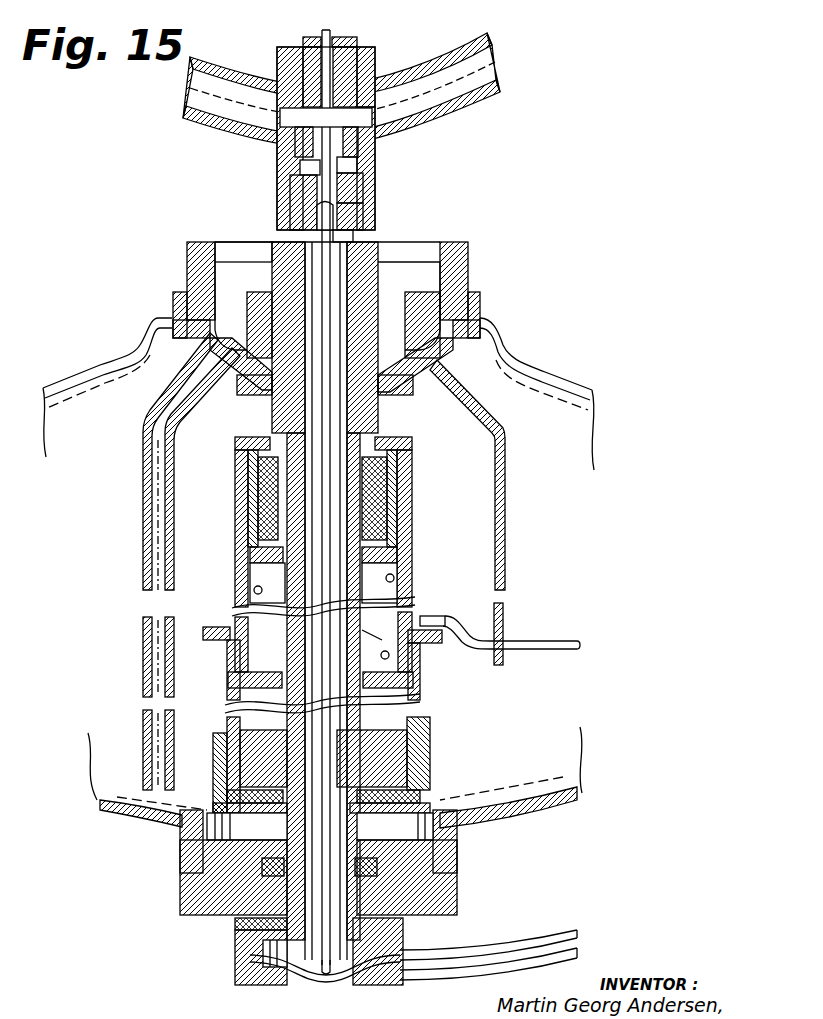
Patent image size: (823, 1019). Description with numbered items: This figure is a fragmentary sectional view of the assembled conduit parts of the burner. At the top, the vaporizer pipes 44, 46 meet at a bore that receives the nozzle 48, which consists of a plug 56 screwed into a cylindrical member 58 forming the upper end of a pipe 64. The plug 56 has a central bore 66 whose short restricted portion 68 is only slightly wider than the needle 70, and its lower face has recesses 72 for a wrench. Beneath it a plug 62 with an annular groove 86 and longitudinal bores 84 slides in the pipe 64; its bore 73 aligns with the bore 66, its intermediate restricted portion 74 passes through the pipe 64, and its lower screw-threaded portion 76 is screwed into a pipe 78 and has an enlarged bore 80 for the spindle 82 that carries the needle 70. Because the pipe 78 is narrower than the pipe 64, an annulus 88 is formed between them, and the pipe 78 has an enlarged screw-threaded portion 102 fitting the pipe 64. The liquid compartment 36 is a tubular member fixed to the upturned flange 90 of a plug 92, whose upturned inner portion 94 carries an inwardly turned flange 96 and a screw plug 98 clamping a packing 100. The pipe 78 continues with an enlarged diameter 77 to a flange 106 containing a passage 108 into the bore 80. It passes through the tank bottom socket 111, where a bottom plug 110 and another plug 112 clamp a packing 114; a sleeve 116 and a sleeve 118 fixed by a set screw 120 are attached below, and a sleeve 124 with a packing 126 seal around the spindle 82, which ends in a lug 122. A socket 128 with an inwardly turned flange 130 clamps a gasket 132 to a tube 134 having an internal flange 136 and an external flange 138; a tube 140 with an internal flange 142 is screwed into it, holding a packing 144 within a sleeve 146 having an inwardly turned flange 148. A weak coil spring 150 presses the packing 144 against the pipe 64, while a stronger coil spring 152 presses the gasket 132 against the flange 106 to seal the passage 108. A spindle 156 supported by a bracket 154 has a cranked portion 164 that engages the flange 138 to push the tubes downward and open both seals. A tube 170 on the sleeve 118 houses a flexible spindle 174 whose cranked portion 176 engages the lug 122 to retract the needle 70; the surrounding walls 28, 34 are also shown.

The housing shell 28 is at (543, 362).
The tube 34 is at (143, 520).
The liquid compartment 36 is at (187, 253).
The vaporizer pipe 44 is at (187, 115).
The vaporizer pipe 46 is at (455, 85).
The nozzle 48 is at (357, 42).
The plug 56 is at (387, 46).
The cylindrical member 58 is at (375, 52).
The plug 62 is at (348, 130).
The pipe 64 is at (378, 212).
The central bore 66 is at (375, 66).
The restricted portion 68 is at (321, 36).
The needle 70 is at (330, 30).
The recesses 72 is at (290, 77).
The bore 73 is at (300, 190).
The intermediate restricted portion 74 is at (303, 163).
The lower screw-threaded portion 76 is at (378, 190).
The enlarged diameter 77 is at (237, 480).
The pipe 78 is at (223, 242).
The enlarged bore 80 is at (333, 660).
The spindle 82 is at (345, 240).
The bores 84 is at (350, 170).
The annular groove 86 is at (365, 136).
The annulus 88 is at (300, 211).
The upturned flange 90 is at (407, 295).
The plug 92 is at (463, 342).
The upturned inner portion 94 is at (250, 322).
The inwardly turned flange 96 is at (247, 292).
The screw plug 98 is at (240, 397).
The packing 100 is at (467, 250).
The enlarged screw-threaded portion 102 is at (478, 317).
The flange 106 is at (230, 718).
The passage 108 is at (387, 767).
The bottom plug 110 is at (413, 883).
The socket 111 is at (457, 843).
The plug 112 is at (273, 895).
The packing 114 is at (277, 853).
The sleeve 116 is at (267, 983).
The sleeve 118 is at (250, 953).
The set screw 120 is at (262, 928).
The lug 122 is at (323, 968).
The sleeve 124 is at (367, 973).
The packing 126 is at (363, 860).
The socket 128 is at (215, 750).
The inwardly turned flange 130 is at (180, 842).
The gasket 132 is at (227, 793).
The tube 134 is at (422, 730).
The internal flange 136 is at (230, 680).
The external flange 138 is at (203, 632).
The tube 140 is at (235, 572).
The internal flange 142 is at (412, 437).
The packing 144 is at (412, 485).
The sleeve 146 is at (397, 517).
The inwardly turned flange 148 is at (412, 553).
The coil spring 150 is at (412, 578).
The coil spring 152 is at (403, 710).
The bracket 154 is at (505, 510).
The spindle 156 is at (545, 652).
The cranked portion 164 is at (430, 615).
The tube 170 is at (488, 947).
The flexible spindle 174 is at (425, 955).
The cranked portion 176 is at (283, 977).